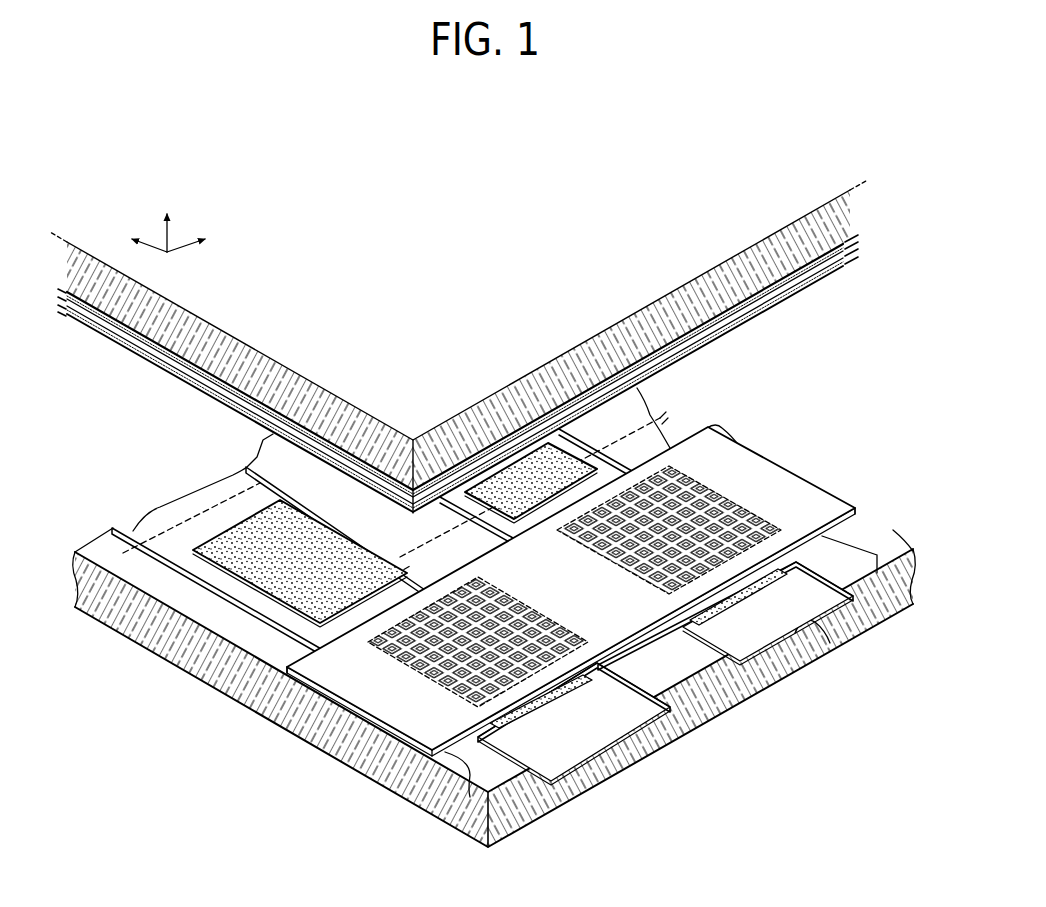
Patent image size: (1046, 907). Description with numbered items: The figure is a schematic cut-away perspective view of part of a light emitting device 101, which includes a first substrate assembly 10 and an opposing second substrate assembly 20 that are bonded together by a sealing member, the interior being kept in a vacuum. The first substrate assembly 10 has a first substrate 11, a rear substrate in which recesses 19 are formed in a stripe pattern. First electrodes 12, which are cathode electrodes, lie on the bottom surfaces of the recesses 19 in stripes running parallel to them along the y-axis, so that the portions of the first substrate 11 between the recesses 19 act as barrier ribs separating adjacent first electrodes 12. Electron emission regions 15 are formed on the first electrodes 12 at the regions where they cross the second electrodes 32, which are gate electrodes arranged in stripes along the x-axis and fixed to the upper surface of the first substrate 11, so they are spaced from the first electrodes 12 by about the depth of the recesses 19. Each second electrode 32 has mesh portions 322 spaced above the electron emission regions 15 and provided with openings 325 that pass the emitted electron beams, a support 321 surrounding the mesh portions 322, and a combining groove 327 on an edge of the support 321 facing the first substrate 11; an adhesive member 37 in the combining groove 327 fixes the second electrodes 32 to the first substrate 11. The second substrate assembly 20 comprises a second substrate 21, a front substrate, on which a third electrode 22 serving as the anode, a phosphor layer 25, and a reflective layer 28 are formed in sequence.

The light emitting device 101 is at (444, 189).
The first substrate assembly 10 is at (494, 638).
The first substrate 11 is at (398, 786).
The first electrodes 12 is at (600, 733).
The electron emission regions 15 is at (235, 546).
The recesses 19 is at (692, 720).
The second substrate assembly 20 is at (458, 347).
The second substrate 21 is at (190, 355).
The third electrode 22 is at (774, 306).
The phosphor layer 25 is at (698, 350).
The reflective layer 28 is at (742, 327).
The second electrodes 32 is at (511, 588).
The support 321 is at (813, 503).
The mesh portions 322 is at (390, 656).
The openings 325 is at (430, 677).
The combining groove 327 is at (288, 676).
The adhesive member 37 is at (456, 818).